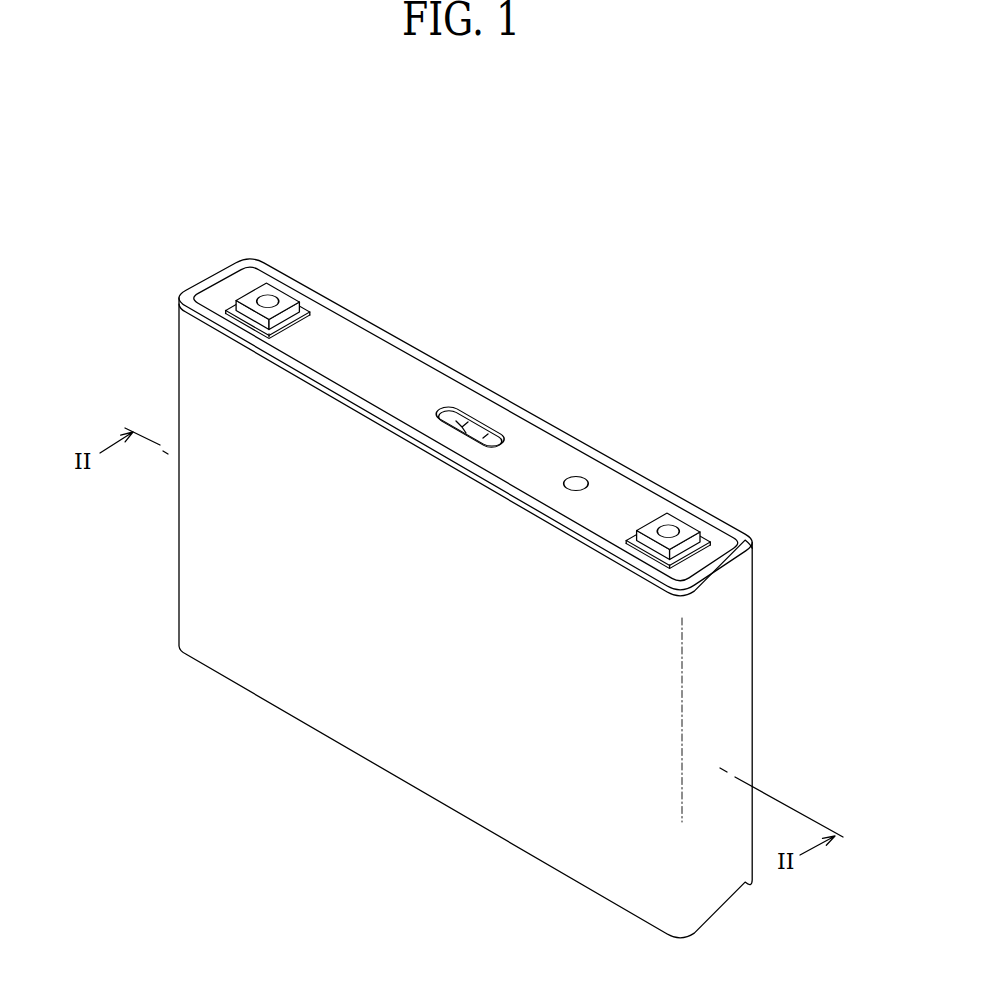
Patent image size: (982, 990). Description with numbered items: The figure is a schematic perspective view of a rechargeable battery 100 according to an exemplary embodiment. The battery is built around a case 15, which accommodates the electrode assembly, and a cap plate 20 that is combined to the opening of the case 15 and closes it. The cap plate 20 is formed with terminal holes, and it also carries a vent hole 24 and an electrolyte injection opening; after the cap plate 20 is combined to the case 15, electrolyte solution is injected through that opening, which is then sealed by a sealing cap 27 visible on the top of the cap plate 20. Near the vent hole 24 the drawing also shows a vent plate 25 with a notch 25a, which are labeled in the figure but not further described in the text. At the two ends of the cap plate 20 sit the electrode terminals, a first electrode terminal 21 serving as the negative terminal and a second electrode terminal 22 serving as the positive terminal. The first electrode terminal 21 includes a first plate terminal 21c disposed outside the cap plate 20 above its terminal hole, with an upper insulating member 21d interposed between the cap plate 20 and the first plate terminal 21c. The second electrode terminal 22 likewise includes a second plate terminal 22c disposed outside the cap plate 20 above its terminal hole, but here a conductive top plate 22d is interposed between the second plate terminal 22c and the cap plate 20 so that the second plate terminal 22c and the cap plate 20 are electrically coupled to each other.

The rechargeable battery 100 is at (493, 570).
The case 15 is at (393, 735).
The cap plate 20 is at (352, 348).
The first electrode terminal 21 is at (278, 271).
The first plate terminal 21c is at (252, 294).
The upper insulating member 21d is at (301, 305).
The second electrode terminal 22 is at (717, 496).
The second plate terminal 22c is at (655, 526).
The conductive top plate 22d is at (706, 548).
The vent hole 24 is at (506, 376).
The vent plate 25 is at (473, 422).
The notch 25a is at (483, 438).
The sealing cap 27 is at (577, 483).